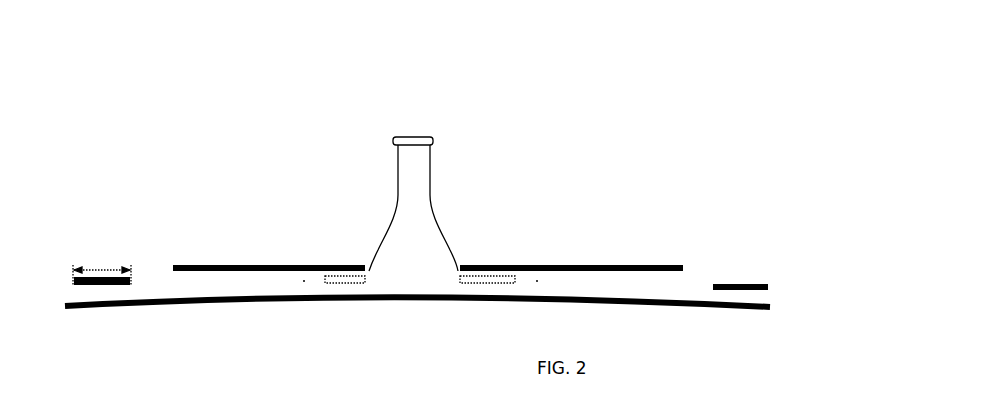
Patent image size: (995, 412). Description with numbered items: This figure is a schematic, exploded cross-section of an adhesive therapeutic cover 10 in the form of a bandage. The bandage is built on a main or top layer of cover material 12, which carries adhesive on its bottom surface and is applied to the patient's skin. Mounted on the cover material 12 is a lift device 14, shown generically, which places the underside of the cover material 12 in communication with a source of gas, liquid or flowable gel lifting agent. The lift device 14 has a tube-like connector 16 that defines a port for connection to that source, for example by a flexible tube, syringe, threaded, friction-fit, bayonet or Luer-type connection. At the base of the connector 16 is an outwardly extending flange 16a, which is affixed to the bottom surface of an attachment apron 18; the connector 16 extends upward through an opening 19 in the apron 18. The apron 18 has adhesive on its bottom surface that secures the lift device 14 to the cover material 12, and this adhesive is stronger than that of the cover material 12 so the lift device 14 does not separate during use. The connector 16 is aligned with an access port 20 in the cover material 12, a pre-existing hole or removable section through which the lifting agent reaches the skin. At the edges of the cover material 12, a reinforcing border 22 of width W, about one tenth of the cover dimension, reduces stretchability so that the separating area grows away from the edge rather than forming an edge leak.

The adhesive therapeutic cover 10 is at (582, 143).
The cover material 12 is at (640, 307).
The lift device 14 is at (452, 141).
The connector 16 is at (395, 173).
The flange 16a is at (342, 283).
The attachment apron 18 is at (547, 266).
The opening 19 is at (455, 274).
The access port 20 is at (432, 298).
The reinforcing border 22 is at (737, 281).